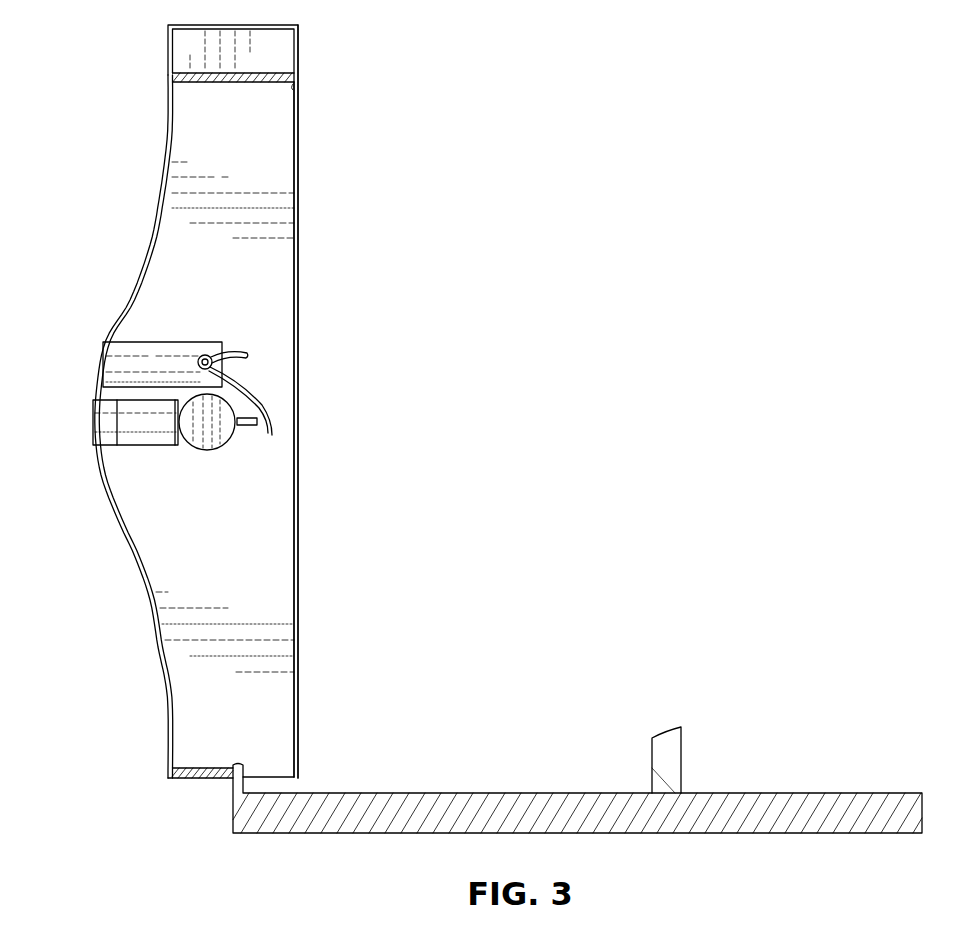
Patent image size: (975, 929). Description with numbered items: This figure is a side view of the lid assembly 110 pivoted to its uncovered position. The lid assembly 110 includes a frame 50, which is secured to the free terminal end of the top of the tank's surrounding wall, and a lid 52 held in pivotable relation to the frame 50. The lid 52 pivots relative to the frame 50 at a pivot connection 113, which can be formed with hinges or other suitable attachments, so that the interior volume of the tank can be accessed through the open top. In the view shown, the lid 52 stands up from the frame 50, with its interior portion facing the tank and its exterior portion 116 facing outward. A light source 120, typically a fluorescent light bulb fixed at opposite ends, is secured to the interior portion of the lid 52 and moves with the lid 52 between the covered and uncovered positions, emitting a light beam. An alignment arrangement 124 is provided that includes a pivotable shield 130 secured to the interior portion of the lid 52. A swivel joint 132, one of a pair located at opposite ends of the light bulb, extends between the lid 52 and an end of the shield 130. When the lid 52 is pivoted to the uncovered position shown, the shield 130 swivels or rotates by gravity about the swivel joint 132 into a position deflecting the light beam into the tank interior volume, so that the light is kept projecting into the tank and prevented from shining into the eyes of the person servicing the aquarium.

The lid assembly 110 is at (104, 191).
The exterior portion 116 is at (134, 556).
The lid 52 is at (159, 648).
The alignment arrangement 124 is at (318, 343).
The pivot connection 113 is at (220, 813).
The frame 50 is at (833, 793).
The swivel joint 132 is at (207, 355).
The pivotable shield 130 is at (262, 392).
The light source 120 is at (208, 452).